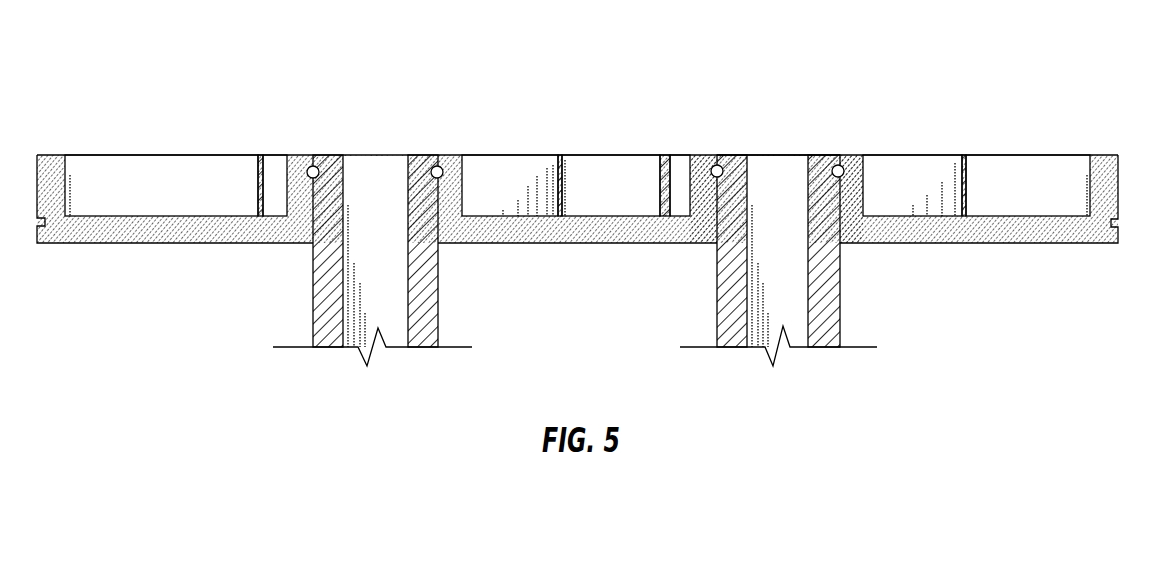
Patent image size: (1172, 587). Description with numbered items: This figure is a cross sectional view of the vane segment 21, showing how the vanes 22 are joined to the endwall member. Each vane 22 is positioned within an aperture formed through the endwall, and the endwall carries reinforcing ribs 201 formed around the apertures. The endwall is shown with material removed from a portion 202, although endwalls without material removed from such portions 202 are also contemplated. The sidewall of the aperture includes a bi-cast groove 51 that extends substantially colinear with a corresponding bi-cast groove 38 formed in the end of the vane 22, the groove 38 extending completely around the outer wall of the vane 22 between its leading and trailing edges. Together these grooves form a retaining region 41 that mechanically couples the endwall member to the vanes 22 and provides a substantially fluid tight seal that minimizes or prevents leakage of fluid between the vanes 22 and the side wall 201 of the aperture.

The vane segment 21 is at (1090, 76).
The vane 22 is at (421, 345).
The bi-cast groove 38 is at (831, 175).
The retaining region 41 is at (712, 172).
The bi-cast groove 51 is at (713, 180).
The reinforcing rib 201 is at (866, 163).
The portion with material removed 202 is at (585, 232).